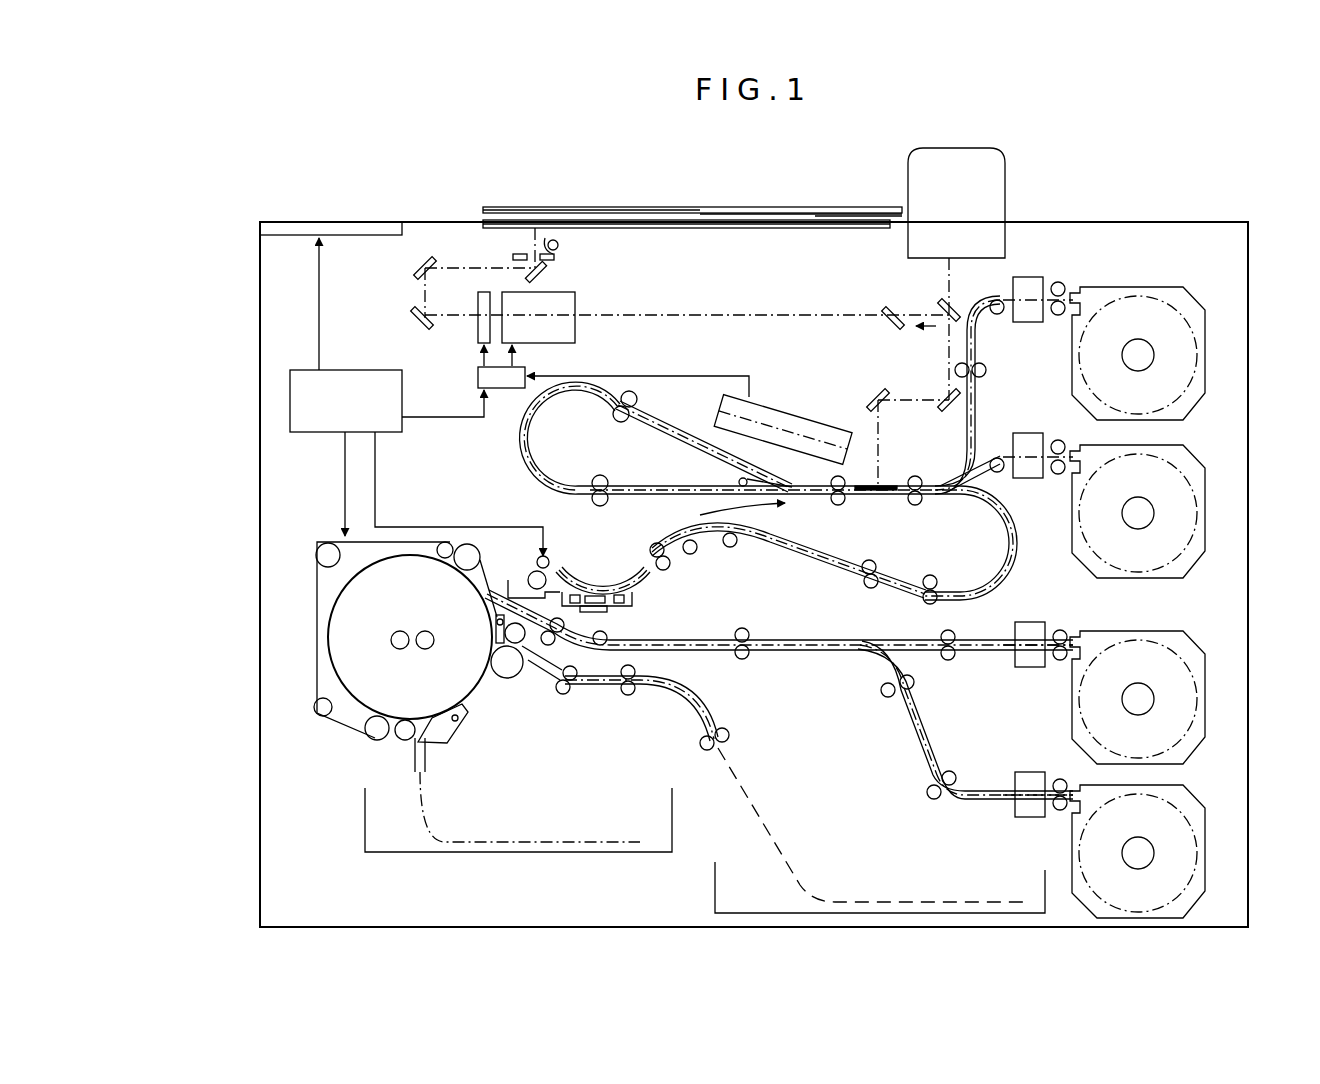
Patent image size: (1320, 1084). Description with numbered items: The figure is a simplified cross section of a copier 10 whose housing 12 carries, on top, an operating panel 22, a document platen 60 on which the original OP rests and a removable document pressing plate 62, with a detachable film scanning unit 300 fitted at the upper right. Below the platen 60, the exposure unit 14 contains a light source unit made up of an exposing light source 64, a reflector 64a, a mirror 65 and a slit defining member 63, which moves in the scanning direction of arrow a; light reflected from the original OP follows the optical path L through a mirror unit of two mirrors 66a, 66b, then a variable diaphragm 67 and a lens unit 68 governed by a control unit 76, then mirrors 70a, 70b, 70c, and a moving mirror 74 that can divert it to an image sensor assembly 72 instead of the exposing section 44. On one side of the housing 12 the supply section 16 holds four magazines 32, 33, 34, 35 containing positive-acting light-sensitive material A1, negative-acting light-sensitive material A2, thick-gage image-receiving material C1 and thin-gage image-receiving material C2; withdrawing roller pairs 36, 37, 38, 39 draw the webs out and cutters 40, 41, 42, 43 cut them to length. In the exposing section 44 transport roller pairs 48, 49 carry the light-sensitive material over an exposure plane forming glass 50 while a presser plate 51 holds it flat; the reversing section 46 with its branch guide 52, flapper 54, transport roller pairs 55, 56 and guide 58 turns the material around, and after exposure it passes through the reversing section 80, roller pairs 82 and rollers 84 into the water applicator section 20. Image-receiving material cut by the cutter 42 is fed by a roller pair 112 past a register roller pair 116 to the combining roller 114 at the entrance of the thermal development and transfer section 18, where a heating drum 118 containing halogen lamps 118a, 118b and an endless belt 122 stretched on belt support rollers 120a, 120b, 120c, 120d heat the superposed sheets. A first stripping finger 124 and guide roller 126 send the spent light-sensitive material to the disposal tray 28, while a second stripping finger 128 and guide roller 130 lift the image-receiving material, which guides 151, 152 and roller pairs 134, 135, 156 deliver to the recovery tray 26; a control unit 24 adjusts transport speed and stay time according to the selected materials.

The copier 10 is at (540, 186).
The housing 12 is at (1248, 410).
The exposure unit 14 is at (708, 284).
The supply section 16 is at (1216, 601).
The thermal development and transfer section 18 is at (442, 494).
The water applicator section 20 is at (590, 578).
The operating panel 22 is at (330, 222).
The control unit 24 is at (290, 398).
The image-receiving material recovery tray 26 is at (856, 812).
The disposal tray 28 is at (601, 832).
The magazine 32 is at (1207, 350).
The magazine 33 is at (1207, 508).
The magazine 34 is at (1207, 703).
The magazine 35 is at (1207, 845).
The withdrawing roller pair 36 is at (1056, 317).
The withdrawing roller pair 37 is at (1058, 476).
The withdrawing roller pair 38 is at (1060, 661).
The withdrawing roller pair 39 is at (1058, 811).
The cutter 40 is at (1030, 323).
The cutter 41 is at (1028, 479).
The cutter 42 is at (1022, 668).
The cutter 43 is at (1018, 812).
The exposing section 44 is at (898, 516).
The reversing section 46 is at (516, 428).
The transport roller pair 48 is at (924, 504).
The transport roller pair 49 is at (835, 503).
The exposure plane forming glass 50 is at (905, 478).
The presser plate 51 is at (867, 494).
The branch guide 52 is at (761, 509).
The flapper 54 is at (735, 478).
The transport roller pair 55 is at (626, 423).
The transport roller pair 56 is at (594, 502).
The guide 58 is at (530, 442).
The document platen 60 is at (886, 229).
The document pressing plate 62 is at (800, 208).
The slit defining member 63 is at (514, 256).
The exposing light source 64 is at (562, 240).
The reflector 64a is at (560, 249).
The mirror 65 is at (556, 280).
The mirror 66a is at (410, 268).
The mirror 66b is at (408, 324).
The variable diaphragm 67 is at (477, 335).
The lens unit 68 is at (576, 325).
The mirror 70a is at (940, 305).
The mirror 70b is at (945, 396).
The mirror 70c is at (872, 390).
The image sensor assembly 72 is at (795, 412).
The moving mirror 74 is at (881, 444).
The control unit 76 is at (477, 381).
The reversing section 80 is at (1026, 586).
The roller pairs 82 is at (868, 586).
The rollers 84 is at (729, 548).
The roller pair 112 is at (749, 633).
The combining roller 114 is at (540, 553).
The register roller pair 116 is at (562, 626).
The heating drum 118 is at (330, 650).
The halogen lamp 118a is at (393, 635).
The halogen lamp 118b is at (425, 650).
The belt support roller 120a is at (444, 542).
The belt support roller 120b is at (324, 544).
The belt support roller 120c is at (313, 708).
The belt support roller 120d is at (367, 738).
The endless belt 122 is at (313, 603).
The first stripping finger 124 is at (456, 745).
The guide roller 126 is at (400, 742).
The second stripping finger 128 is at (492, 620).
The guide roller 130 is at (507, 679).
The roller pair 134 is at (566, 696).
The roller pair 135 is at (640, 668).
The guide 151 is at (622, 695).
The guide 152 is at (712, 712).
The rollers 156 is at (728, 740).
The film scanning unit 300 is at (1022, 198).
The original OP is at (700, 216).
The optical path L is at (745, 318).
The scanning direction a is at (722, 252).
The positive-acting light-sensitive material A1 is at (1205, 312).
The negative-acting light-sensitive material A2 is at (1205, 468).
The thick-gage image-receiving material C1 is at (1205, 656).
The thin-gage image-receiving material C2 is at (1205, 808).